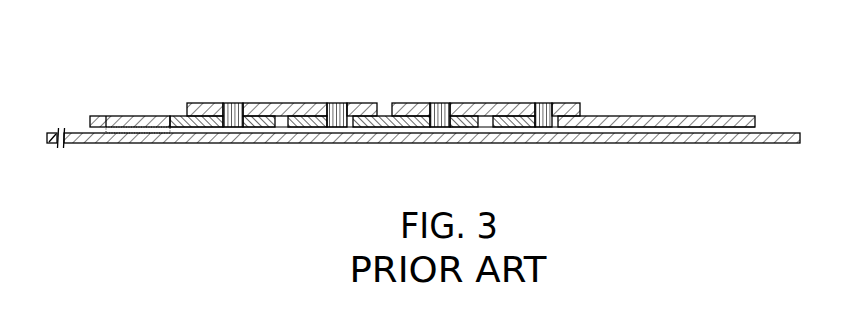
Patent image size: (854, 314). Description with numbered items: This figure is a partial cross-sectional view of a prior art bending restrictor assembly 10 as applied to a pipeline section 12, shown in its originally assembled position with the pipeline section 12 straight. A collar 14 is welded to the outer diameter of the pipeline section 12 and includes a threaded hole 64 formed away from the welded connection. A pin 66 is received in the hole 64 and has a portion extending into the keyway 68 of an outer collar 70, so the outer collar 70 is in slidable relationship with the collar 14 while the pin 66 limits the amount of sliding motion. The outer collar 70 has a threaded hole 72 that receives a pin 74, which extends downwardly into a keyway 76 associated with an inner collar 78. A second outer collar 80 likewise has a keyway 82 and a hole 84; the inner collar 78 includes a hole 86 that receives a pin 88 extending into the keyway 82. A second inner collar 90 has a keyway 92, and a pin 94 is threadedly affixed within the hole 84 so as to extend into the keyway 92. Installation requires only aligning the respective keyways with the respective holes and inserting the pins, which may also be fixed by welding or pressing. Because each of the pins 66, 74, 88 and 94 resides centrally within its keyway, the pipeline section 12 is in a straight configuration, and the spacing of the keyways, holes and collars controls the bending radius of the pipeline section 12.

The bending restrictor assembly 10 is at (457, 47).
The pipeline section 12 is at (683, 143).
The collar 14 is at (99, 115).
The hole 64 is at (246, 127).
The pin 66 is at (244, 103).
The keyway 68 is at (225, 103).
The outer collar 70 is at (272, 103).
The threaded hole 72 is at (348, 103).
The pin 74 is at (327, 103).
The keyway 76 is at (348, 127).
The inner collar 78 is at (303, 127).
The second outer collar 80 is at (478, 103).
The keyway 82 is at (430, 103).
The hole 84 is at (556, 103).
The hole 86 is at (442, 128).
The pin 88 is at (447, 103).
The second inner collar 90 is at (608, 116).
The keyway 92 is at (555, 128).
The pin 94 is at (540, 103).